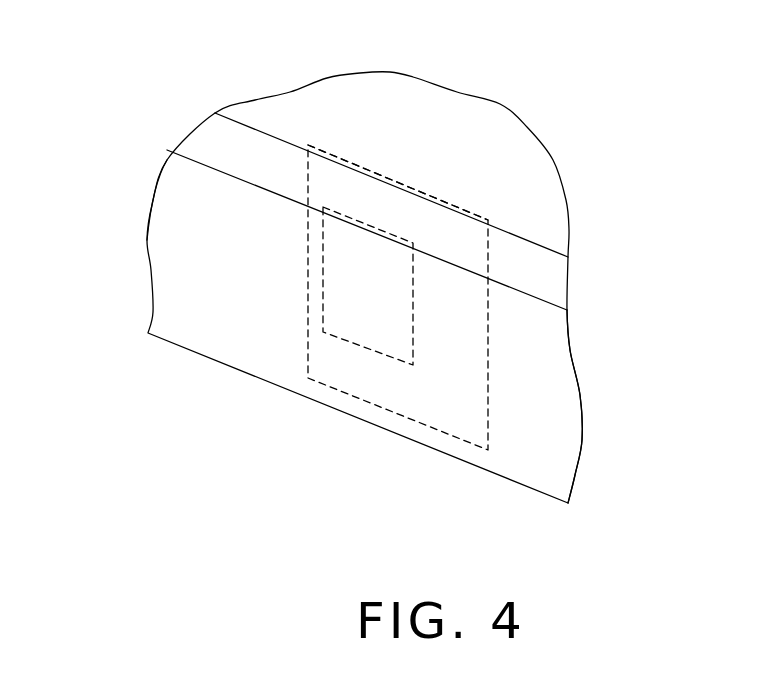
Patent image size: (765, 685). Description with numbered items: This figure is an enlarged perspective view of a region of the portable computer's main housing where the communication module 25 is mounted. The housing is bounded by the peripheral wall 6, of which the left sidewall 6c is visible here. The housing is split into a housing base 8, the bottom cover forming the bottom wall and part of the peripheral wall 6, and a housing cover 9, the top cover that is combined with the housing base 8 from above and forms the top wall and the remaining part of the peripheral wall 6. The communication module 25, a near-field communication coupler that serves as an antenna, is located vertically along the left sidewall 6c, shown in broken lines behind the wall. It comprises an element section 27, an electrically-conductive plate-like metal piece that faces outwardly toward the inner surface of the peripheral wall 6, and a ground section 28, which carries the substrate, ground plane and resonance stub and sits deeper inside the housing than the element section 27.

The peripheral wall 6 is at (223, 323).
The left sidewall 6c is at (170, 242).
The housing cover 9 is at (548, 285).
The housing base 8 is at (548, 428).
The communication module 25 is at (405, 178).
The element section 27 is at (340, 338).
The ground section 28 is at (402, 417).